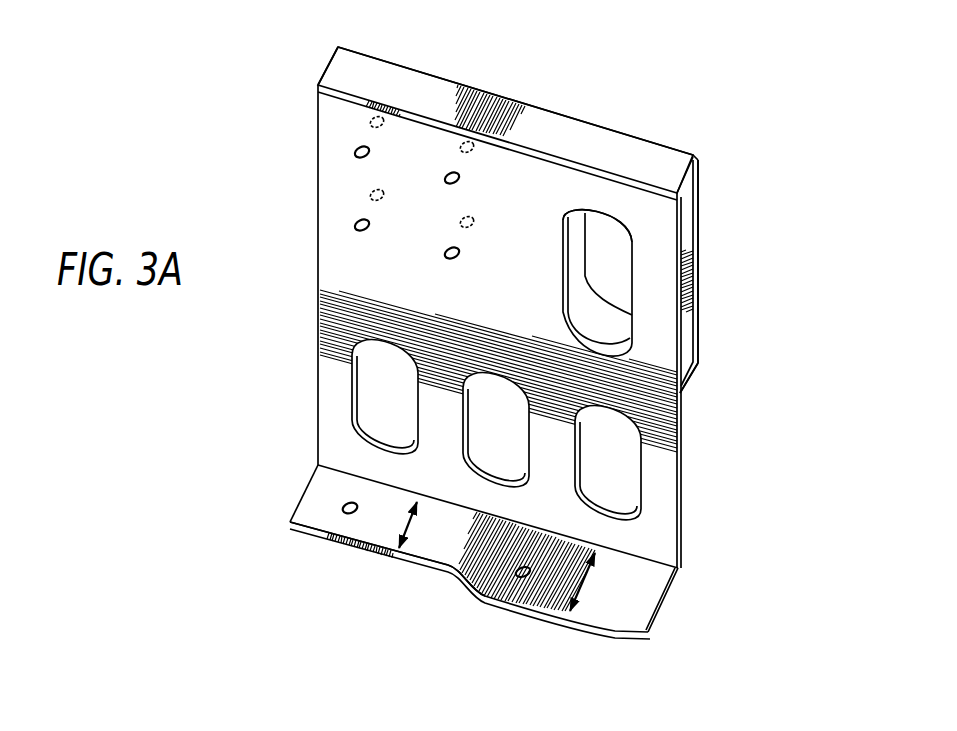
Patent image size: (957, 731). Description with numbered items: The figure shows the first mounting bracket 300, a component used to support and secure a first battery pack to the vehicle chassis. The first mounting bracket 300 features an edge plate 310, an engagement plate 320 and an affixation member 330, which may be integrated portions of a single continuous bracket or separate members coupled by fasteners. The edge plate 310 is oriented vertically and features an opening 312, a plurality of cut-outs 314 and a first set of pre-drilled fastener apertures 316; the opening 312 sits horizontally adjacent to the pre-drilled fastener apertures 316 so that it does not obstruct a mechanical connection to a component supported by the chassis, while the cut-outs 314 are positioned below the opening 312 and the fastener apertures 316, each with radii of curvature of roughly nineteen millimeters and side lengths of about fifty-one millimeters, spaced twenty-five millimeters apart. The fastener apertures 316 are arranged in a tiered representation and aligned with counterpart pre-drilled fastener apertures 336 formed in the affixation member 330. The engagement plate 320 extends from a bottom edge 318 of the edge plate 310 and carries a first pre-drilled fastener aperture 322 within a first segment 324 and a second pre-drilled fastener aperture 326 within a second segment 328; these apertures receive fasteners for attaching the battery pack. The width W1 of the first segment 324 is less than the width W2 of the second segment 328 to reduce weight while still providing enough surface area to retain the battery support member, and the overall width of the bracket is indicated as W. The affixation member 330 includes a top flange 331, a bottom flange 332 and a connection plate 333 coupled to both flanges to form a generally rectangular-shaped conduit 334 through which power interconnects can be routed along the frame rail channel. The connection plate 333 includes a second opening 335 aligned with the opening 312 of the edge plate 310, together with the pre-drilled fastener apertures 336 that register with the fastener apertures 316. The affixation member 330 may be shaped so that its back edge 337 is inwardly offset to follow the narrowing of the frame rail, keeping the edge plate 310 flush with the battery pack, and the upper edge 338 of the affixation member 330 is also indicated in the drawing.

The first mounting bracket 300 is at (280, 233).
The edge plate 310 is at (668, 492).
The opening 312 is at (607, 278).
The plurality of cut-outs 314 is at (388, 382).
The first set of pre-drilled fastener apertures 316 is at (400, 177).
The bottom edge 318 is at (680, 567).
The engagement plate 320 is at (647, 605).
The first pre-drilled fastener aperture 322 is at (352, 507).
The first segment 324 is at (363, 532).
The second pre-drilled fastener aperture 326 is at (523, 572).
The second segment 328 is at (578, 612).
The affixation member 330 is at (708, 223).
The top flange 331 is at (598, 141).
The bottom flange 332 is at (687, 367).
The connection plate 333 is at (695, 183).
The rectangular-shaped conduit 334 is at (708, 258).
The second opening 335 is at (600, 232).
The pre-drilled fastener apertures 336 is at (458, 143).
The back edge 337 is at (655, 155).
The top left edge 338 is at (497, 100).
The width dimension W is at (297, 420).
The width of the first segment W1 is at (407, 525).
The width of the second segment W2 is at (582, 592).